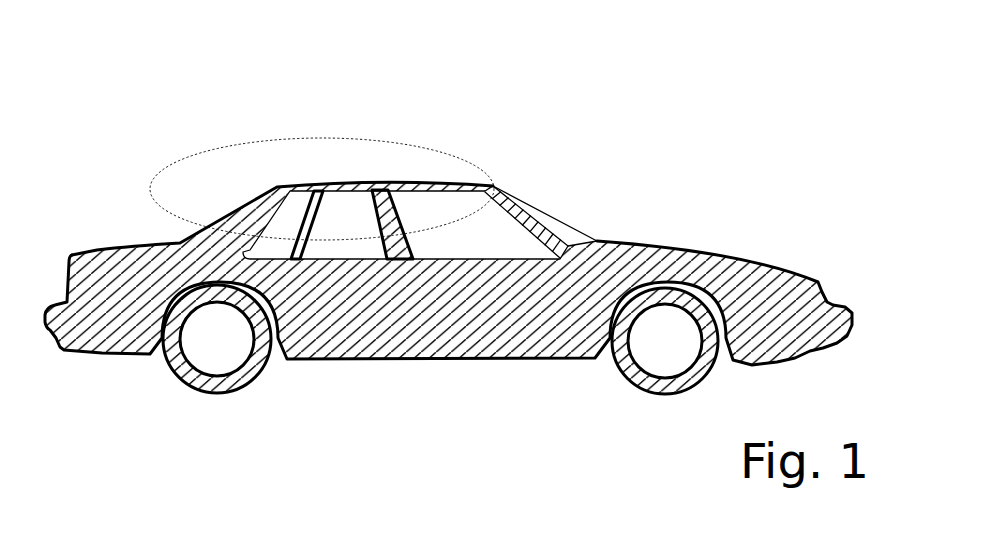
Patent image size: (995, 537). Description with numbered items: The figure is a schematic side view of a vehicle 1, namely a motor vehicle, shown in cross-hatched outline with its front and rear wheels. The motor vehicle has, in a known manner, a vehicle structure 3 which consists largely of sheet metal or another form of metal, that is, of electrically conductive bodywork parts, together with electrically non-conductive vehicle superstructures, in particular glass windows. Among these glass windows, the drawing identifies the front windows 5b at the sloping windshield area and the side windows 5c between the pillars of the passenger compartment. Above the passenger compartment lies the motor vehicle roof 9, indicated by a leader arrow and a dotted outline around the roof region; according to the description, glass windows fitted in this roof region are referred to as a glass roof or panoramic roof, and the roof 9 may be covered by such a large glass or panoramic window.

The vehicle 1 is at (657, 123).
The vehicle structure 3 is at (703, 247).
The front windows 5b is at (543, 217).
The side windows 5c is at (348, 217).
The motor vehicle roof 9 is at (332, 172).